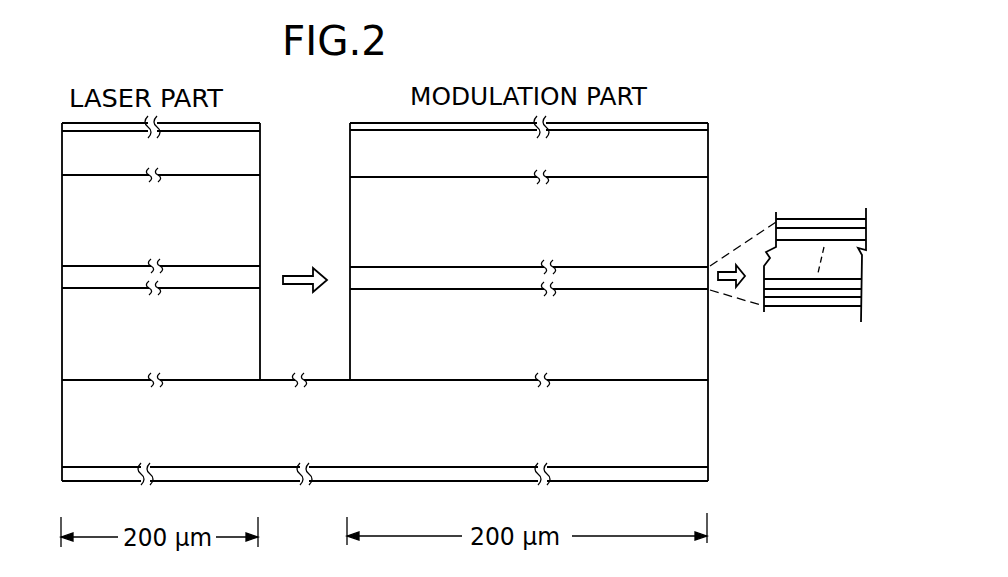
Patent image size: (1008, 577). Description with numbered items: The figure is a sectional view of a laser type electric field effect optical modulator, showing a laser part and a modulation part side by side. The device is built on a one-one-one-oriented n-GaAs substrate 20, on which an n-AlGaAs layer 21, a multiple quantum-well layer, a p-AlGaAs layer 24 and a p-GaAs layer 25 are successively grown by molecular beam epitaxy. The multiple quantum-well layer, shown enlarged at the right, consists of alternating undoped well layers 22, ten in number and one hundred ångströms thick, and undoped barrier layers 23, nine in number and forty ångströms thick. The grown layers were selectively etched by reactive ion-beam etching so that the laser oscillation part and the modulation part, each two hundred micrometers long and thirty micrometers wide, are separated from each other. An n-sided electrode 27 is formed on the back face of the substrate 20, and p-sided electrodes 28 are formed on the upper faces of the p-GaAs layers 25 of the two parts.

The n-GaAs substrate 20 is at (693, 430).
The n-AlGaAs layer 21 is at (693, 362).
The well layer 22 is at (862, 226).
The barrier layer 23 is at (862, 238).
The p-AlGaAs layer 24 is at (692, 218).
The p-GaAs layer 25 is at (697, 162).
The n-sided electrode 27 is at (700, 475).
The p-sided electrode 28 is at (710, 124).